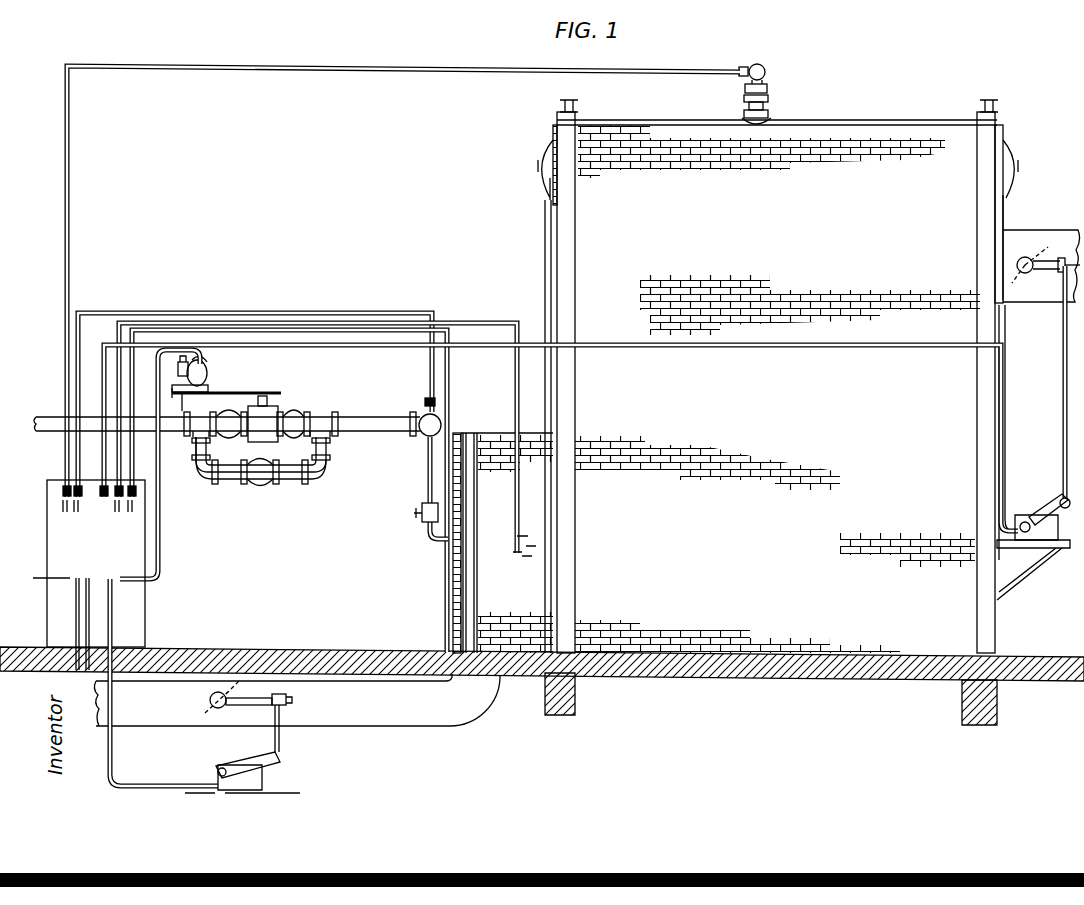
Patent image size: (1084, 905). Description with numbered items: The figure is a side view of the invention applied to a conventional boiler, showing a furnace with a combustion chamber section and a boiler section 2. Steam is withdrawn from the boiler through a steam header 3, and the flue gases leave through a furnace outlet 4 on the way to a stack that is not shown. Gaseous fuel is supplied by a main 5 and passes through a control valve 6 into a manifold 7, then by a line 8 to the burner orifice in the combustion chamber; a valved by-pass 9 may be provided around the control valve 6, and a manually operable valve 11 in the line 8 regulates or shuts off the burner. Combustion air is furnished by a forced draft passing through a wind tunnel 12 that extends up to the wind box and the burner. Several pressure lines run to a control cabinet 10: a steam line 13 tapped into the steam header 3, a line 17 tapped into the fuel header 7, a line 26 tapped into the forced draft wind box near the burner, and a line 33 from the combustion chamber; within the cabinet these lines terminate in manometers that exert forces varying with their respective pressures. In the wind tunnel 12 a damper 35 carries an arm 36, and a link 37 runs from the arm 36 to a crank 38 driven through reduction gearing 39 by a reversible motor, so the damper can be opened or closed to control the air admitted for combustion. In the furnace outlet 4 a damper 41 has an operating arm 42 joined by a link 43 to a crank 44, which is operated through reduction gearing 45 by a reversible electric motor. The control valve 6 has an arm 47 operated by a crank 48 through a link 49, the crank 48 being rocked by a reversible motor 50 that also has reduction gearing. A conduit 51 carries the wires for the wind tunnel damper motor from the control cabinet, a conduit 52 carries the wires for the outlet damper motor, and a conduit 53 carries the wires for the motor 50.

The boiler section 2 is at (735, 376).
The steam header 3 is at (767, 72).
The furnace outlet 4 is at (1055, 232).
The main 5 is at (38, 416).
The control valve 6 is at (272, 418).
The manifold 7 is at (421, 414).
The line 8 is at (426, 467).
The valved by-pass 9 is at (293, 480).
The control cabinet 10 is at (47, 536).
The manually operable valve 11 is at (413, 514).
The wind tunnel 12 is at (360, 722).
The steam line 13 is at (428, 66).
The line 17 is at (333, 312).
The line 26 is at (447, 398).
The line 33 is at (517, 402).
The damper 35 is at (212, 695).
The arm 36 is at (258, 700).
The link 37 is at (281, 740).
The crank 38 is at (256, 762).
The reduction gearing 39 is at (219, 766).
The damper 41 is at (1032, 258).
The operating arm 42 is at (1056, 276).
The link 43 is at (1065, 412).
The crank 44 is at (1046, 514).
The reduction gearing 45 is at (1022, 514).
The arm 47 is at (237, 391).
The crank 48 is at (174, 365).
The link 49 is at (172, 388).
The reversible motor 50 is at (209, 366).
The conduit 51 is at (113, 618).
The conduit 52 is at (856, 356).
The conduit 53 is at (161, 491).